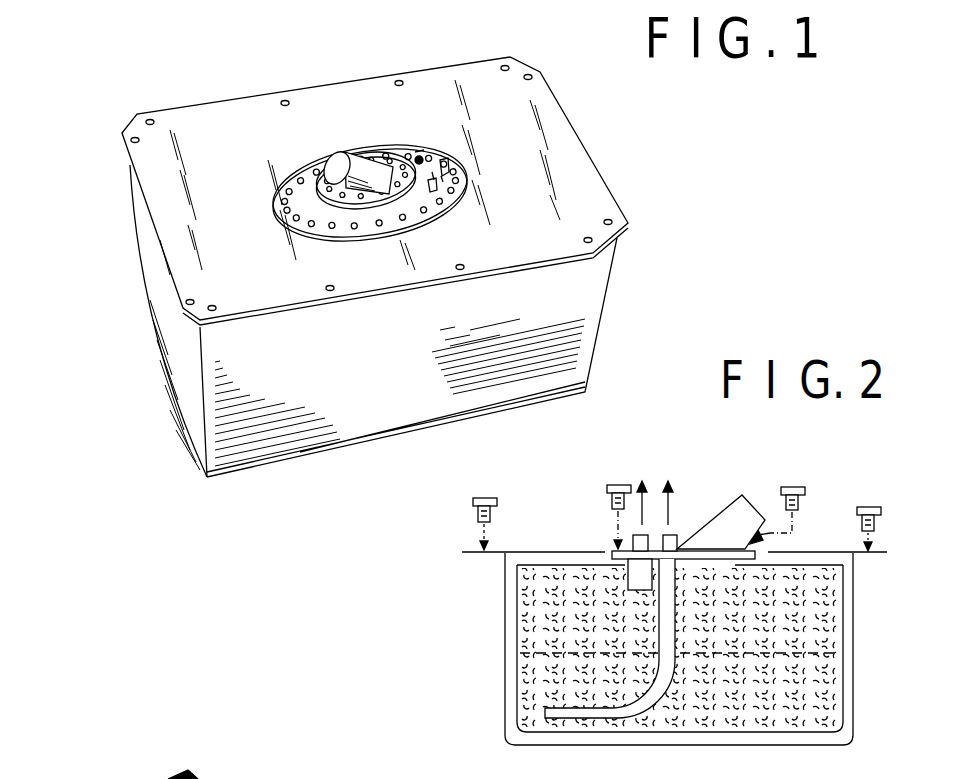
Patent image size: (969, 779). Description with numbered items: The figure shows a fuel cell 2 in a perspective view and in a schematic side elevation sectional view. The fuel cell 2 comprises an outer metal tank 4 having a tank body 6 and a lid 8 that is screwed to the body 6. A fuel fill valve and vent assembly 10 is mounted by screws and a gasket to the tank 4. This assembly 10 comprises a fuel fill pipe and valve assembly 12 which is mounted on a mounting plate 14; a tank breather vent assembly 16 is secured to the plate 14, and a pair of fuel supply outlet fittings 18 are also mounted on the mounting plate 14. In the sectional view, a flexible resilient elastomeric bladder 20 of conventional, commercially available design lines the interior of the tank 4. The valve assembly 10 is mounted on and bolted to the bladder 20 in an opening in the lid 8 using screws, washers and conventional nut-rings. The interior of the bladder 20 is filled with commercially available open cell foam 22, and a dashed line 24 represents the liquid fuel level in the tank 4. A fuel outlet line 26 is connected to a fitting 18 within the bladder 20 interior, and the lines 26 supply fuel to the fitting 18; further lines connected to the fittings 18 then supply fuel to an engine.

In FIG. 1, the fuel cell 2 is at (630, 176).
In FIG. 2, the fuel cell 2 is at (866, 666).
In FIG. 1, the outer metal tank 4 is at (138, 301).
In FIG. 2, the outer metal tank 4 is at (398, 692).
In FIG. 1, the tank body 6 is at (217, 403).
In FIG. 2, the tank body 6 is at (506, 746).
In FIG. 1, the lid 8 is at (170, 193).
In FIG. 2, the lid 8 is at (540, 551).
In FIG. 1, the fuel fill valve and vent assembly 10 is at (380, 123).
In FIG. 2, the fuel fill valve and vent assembly 10 is at (708, 494).
In FIG. 1, the fuel fill pipe and valve assembly 12 is at (332, 153).
In FIG. 2, the fuel fill pipe and valve assembly 12 is at (805, 455).
In FIG. 1, the mounting plate 14 is at (462, 192).
In FIG. 2, the mounting plate 14 is at (710, 568).
In FIG. 1, the tank breather vent assembly 16 is at (458, 168).
In FIG. 2, the tank breather vent assembly 16 is at (613, 540).
In FIG. 1, the fuel supply outlet fittings 18 is at (420, 152).
In FIG. 2, the fuel supply outlet fittings 18 is at (678, 536).
In FIG. 2, the flexible resilient elastomeric bladder 20 is at (840, 623).
In FIG. 2, the open cell foam 22 is at (796, 706).
In FIG. 2, the dashed line 24 is at (553, 606).
In FIG. 2, the fuel outlet line 26 is at (583, 716).